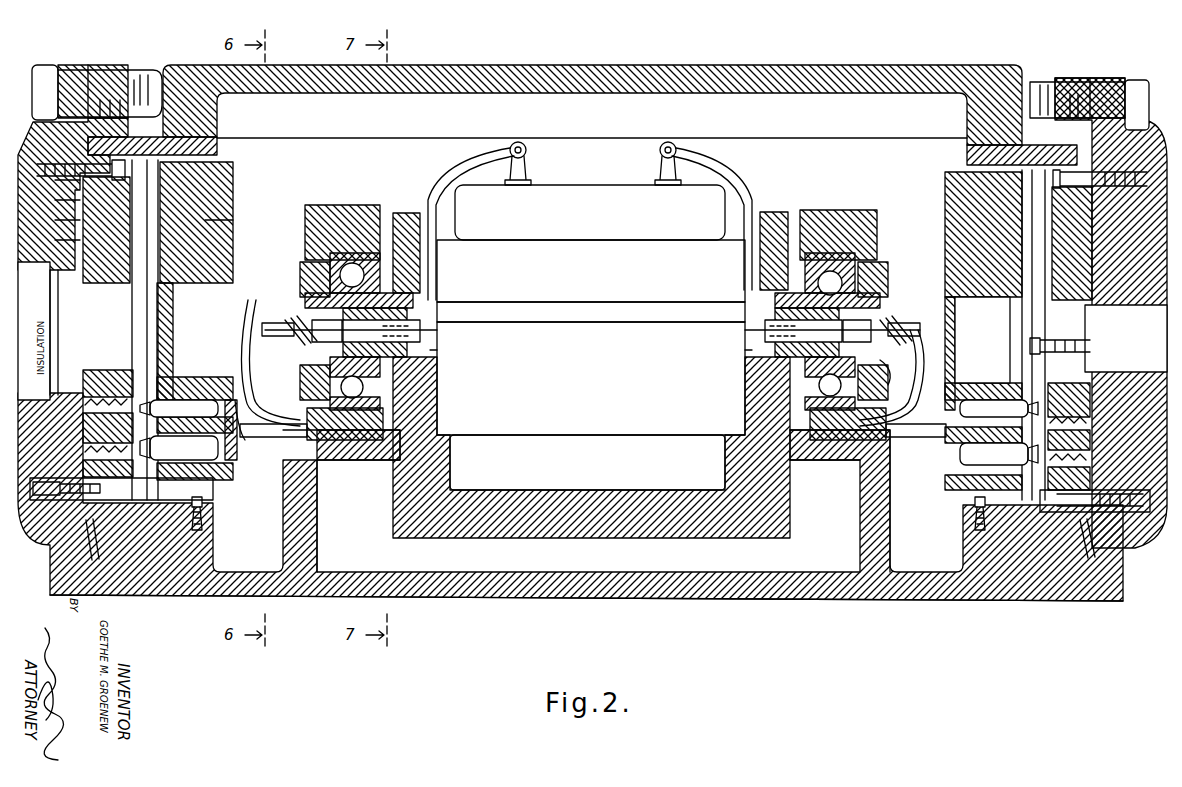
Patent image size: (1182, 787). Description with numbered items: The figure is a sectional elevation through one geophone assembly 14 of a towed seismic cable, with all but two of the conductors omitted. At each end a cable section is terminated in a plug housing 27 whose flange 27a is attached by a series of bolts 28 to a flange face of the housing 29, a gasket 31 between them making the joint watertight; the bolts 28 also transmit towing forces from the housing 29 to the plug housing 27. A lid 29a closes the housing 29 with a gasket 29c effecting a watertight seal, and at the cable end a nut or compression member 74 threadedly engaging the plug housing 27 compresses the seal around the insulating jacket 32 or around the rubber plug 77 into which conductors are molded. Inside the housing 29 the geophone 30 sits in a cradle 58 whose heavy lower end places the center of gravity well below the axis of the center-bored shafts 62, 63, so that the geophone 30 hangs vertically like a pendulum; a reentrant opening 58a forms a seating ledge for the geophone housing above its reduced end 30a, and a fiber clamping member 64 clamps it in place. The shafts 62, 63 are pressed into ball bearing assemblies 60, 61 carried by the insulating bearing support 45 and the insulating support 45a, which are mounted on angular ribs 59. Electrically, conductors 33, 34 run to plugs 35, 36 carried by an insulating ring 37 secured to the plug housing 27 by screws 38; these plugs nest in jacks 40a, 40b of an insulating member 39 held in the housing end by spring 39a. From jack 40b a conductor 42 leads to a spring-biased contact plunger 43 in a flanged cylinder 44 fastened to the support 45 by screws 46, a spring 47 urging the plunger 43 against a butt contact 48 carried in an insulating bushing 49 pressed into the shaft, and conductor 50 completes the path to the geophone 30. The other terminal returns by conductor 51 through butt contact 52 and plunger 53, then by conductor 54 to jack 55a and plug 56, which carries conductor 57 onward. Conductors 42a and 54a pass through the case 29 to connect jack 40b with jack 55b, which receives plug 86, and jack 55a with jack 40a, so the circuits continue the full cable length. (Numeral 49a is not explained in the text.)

The geophone assembly 14 is at (660, 639).
The plug housing 27 is at (52, 530).
The flange 27a is at (1095, 78).
The bolts 28 is at (45, 68).
The housing 29 is at (180, 585).
The lid 29a is at (1005, 70).
The gasket 29c is at (205, 150).
The geophone 30 is at (600, 385).
The reduced-section end 30a is at (587, 462).
The gasket 31 is at (92, 560).
The insulating jacket 32 is at (1116, 328).
The conductor 33 is at (1060, 341).
The conductor 34 is at (1100, 270).
The plug 35 is at (1000, 400).
The plug 36 is at (945, 495).
The ring 37 is at (1055, 240).
The screws 38 is at (1055, 183).
The insulating member 39 is at (233, 172).
The spring 39a is at (233, 222).
The jack 40a is at (945, 470).
The jack 40b is at (982, 340).
The conductor 42 is at (918, 350).
The conductor 42a is at (300, 430).
The contact plunger 43 is at (857, 331).
The flanged cylinder 44 is at (280, 320).
The bearing support 45 is at (825, 210).
The insulating support 45a is at (335, 205).
The screws 46 is at (880, 296).
The spring 47 is at (899, 373).
The butt contact 48 is at (803, 331).
The insulating member 49 is at (745, 350).
The plate 49a is at (437, 352).
The conductor 50 is at (735, 168).
The conductor 51 is at (450, 165).
The butt contact 52 is at (381, 331).
The contact plunger 53 is at (327, 331).
The conductor 54 is at (262, 380).
The conductor 54a is at (254, 423).
The jack 55a is at (235, 460).
The jack 55b is at (210, 377).
The plug 56 is at (210, 480).
The conductor 57 is at (112, 360).
The cradle 58 is at (795, 510).
The reentrant opening 58a is at (748, 480).
The angular ribs 59 is at (338, 455).
The ball bearing assembly 60 is at (827, 331).
The ball bearing assembly 61 is at (356, 331).
The shaft 62 is at (745, 300).
The shaft 63 is at (437, 300).
The fiber clamping member 64 is at (403, 213).
The compression member 74 is at (1150, 366).
The plug 77 is at (36, 332).
The plug 86 is at (180, 400).